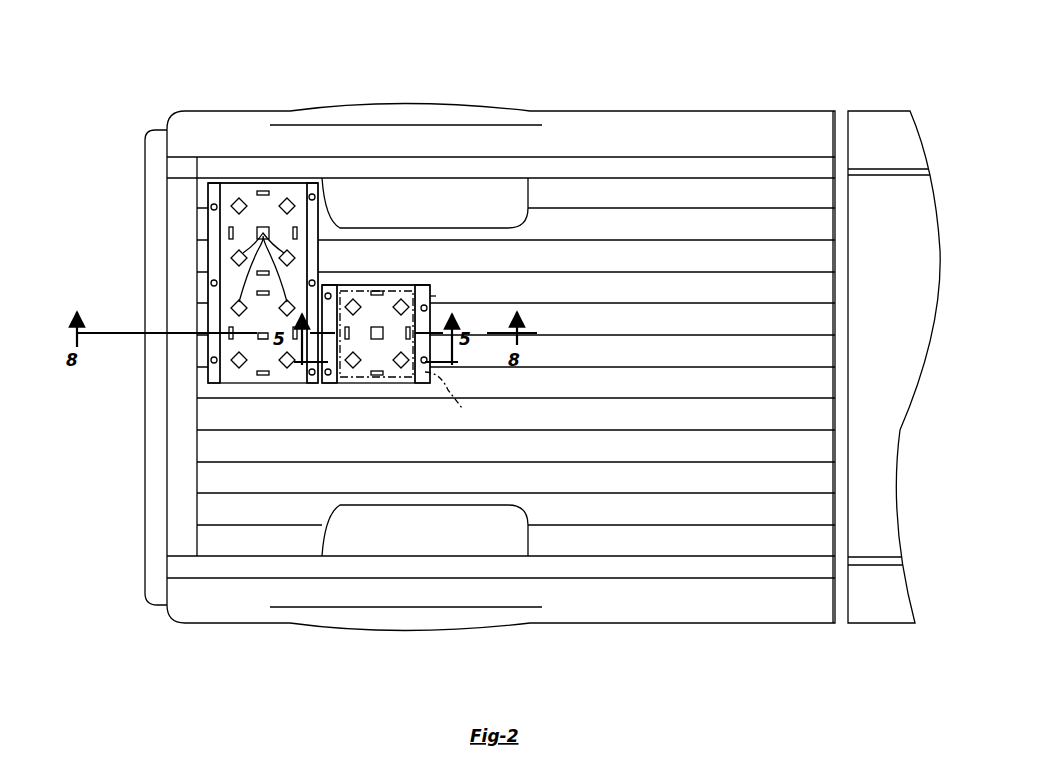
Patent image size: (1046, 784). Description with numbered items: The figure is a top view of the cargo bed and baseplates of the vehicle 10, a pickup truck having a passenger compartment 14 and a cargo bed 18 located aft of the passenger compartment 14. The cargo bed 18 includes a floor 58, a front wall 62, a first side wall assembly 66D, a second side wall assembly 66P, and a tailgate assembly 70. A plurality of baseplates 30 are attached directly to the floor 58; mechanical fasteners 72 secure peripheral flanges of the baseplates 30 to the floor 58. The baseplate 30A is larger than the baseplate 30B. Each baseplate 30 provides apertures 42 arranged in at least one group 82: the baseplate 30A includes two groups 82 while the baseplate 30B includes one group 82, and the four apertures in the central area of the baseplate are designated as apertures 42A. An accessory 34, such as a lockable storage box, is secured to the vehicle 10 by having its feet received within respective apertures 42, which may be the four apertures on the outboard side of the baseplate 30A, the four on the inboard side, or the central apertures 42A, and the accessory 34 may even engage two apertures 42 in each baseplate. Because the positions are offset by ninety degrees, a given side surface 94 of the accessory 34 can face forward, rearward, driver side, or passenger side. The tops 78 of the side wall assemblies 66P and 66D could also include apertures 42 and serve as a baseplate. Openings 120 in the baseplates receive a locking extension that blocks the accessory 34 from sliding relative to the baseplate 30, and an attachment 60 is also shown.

The vehicle 10 is at (173, 52).
The passenger compartment 14 is at (880, 598).
The cargo bed 18 is at (810, 598).
The baseplate 30 is at (278, 392).
The baseplate 30A is at (240, 388).
The baseplate 30B is at (355, 388).
The accessory 34 is at (457, 398).
The apertures 42 is at (351, 297).
The apertures 42A is at (263, 226).
The floor 58 is at (672, 225).
The panel attachment 60 is at (432, 296).
The front wall 62 is at (835, 193).
The first side wall assembly 66D is at (377, 142).
The second side wall assembly 66P is at (378, 590).
The tailgate assembly 70 is at (157, 500).
The mechanical fasteners 72 is at (210, 283).
The tops 78 is at (512, 168).
The group 82 is at (206, 228).
The side surface 94 is at (293, 304).
The openings 120 is at (262, 186).